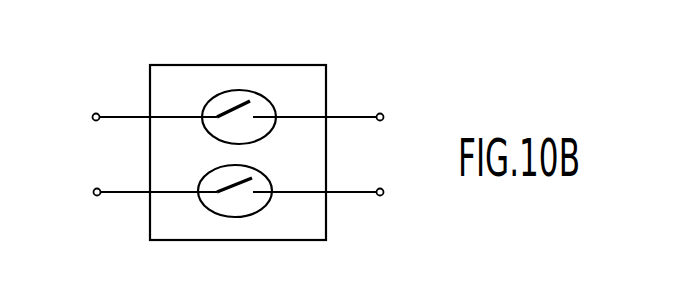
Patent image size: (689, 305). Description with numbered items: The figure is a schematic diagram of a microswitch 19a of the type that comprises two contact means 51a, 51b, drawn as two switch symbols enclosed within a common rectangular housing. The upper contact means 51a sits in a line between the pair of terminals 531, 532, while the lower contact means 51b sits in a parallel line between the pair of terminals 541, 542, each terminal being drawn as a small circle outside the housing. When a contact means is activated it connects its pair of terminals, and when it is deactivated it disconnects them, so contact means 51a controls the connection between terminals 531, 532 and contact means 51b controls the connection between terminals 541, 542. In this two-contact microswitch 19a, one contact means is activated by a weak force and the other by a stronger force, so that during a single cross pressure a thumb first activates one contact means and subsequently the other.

The microswitch 19a is at (194, 65).
The contact means 51a is at (238, 90).
The contact means 51b is at (253, 217).
The terminal 531 is at (132, 94).
The terminal 532 is at (344, 94).
The terminal 541 is at (136, 204).
The terminal 542 is at (344, 203).